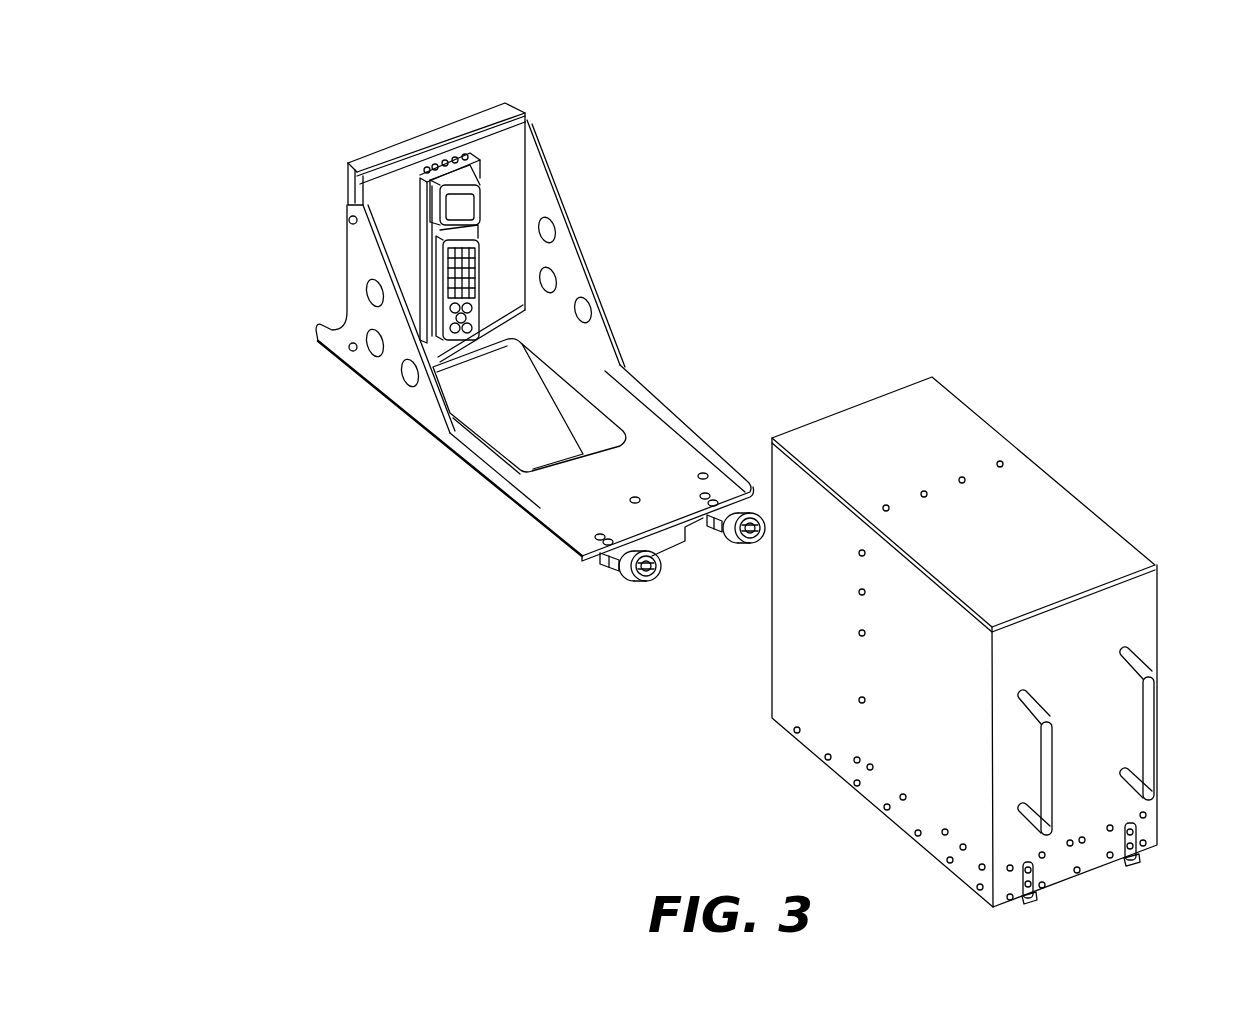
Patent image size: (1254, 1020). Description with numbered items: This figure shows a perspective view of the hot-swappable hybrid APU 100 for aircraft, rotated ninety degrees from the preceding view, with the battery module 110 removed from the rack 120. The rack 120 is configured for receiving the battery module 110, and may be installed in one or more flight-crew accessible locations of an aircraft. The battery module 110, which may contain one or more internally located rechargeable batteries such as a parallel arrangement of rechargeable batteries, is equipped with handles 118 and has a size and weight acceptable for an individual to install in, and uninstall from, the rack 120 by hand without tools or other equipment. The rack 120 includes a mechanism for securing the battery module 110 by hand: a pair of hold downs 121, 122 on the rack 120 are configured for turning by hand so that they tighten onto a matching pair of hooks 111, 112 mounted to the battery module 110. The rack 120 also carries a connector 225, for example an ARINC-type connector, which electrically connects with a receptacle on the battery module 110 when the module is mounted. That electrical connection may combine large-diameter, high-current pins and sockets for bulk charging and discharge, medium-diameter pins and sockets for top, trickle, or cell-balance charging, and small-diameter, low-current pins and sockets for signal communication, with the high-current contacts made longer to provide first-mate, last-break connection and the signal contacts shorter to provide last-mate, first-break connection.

The hybrid APU 100 is at (247, 102).
The battery module 110 is at (958, 422).
The hook 111 is at (1025, 902).
The hook 112 is at (1125, 863).
The handles 118 is at (1050, 720).
The rack 120 is at (353, 163).
The hold down 121 is at (636, 582).
The hold down 122 is at (746, 546).
The connector 225 is at (478, 275).